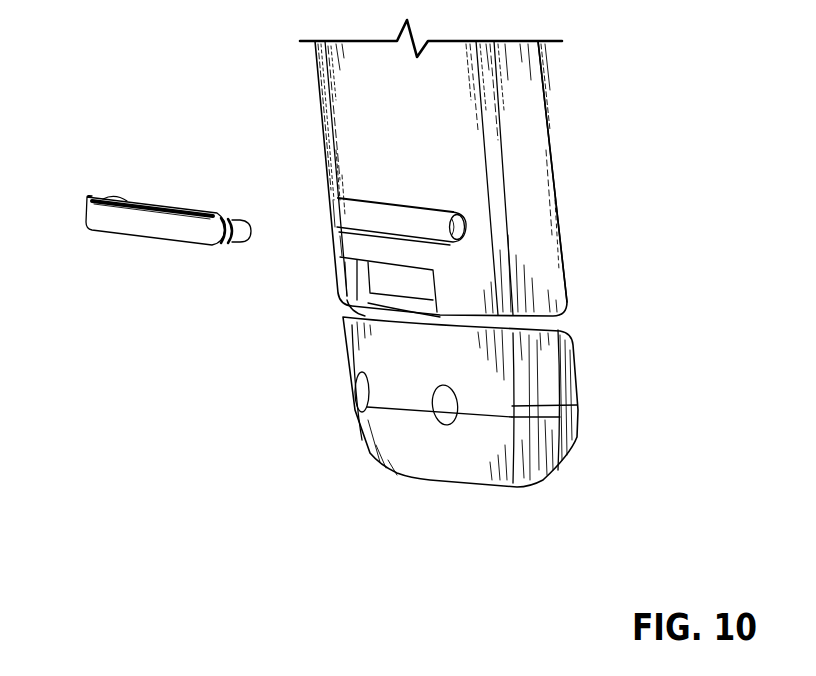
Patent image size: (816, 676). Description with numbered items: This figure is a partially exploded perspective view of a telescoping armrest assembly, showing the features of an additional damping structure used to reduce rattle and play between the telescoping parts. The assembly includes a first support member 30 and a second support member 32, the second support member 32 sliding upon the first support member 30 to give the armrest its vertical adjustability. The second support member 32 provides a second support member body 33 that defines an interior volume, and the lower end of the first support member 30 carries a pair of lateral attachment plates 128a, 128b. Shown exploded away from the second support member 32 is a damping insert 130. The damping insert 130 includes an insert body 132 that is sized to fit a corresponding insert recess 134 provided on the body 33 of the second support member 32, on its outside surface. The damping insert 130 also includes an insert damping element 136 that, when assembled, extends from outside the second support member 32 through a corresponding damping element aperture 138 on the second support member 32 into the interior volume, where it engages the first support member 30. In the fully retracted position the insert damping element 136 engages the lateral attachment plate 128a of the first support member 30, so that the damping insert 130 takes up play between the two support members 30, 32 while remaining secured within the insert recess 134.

The second support member 32 is at (550, 122).
The second support member body 33 is at (552, 171).
The insert recess 134 is at (340, 219).
The damping element aperture 138 is at (466, 231).
The first support member 30 is at (438, 482).
The lateral attachment plate 128a is at (377, 365).
The lateral attachment plate 128b is at (563, 391).
The damping insert 130 is at (130, 233).
The insert body 132 is at (182, 228).
The insert damping element 136 is at (243, 222).